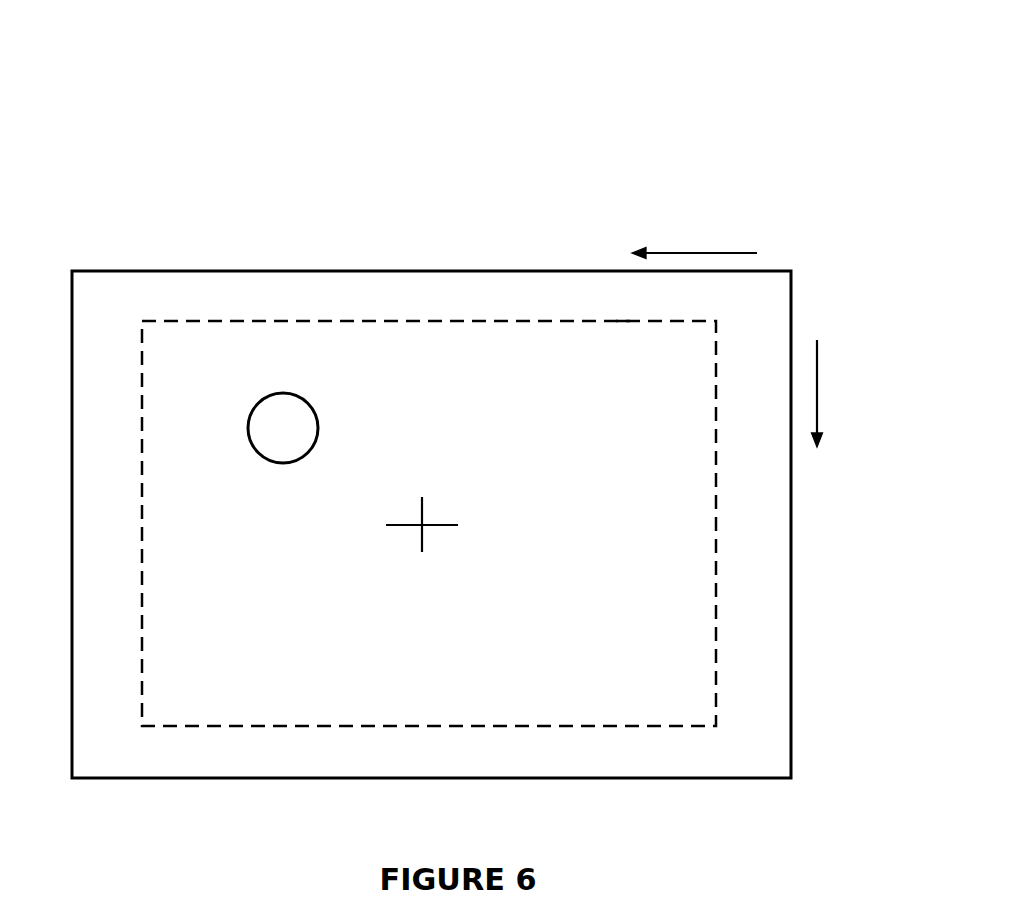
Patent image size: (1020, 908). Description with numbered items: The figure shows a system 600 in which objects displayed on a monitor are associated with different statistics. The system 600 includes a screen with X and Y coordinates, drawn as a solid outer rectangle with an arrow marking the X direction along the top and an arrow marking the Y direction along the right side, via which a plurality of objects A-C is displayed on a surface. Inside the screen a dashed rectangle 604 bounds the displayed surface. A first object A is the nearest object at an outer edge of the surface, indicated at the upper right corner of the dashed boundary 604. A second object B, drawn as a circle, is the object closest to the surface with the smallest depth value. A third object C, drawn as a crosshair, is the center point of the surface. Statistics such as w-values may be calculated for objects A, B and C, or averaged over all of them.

The system 600 is at (688, 112).
The active region boundary 604 is at (686, 503).
The first object A is at (626, 351).
The second object B is at (343, 404).
The third object C is at (448, 560).
The X coordinate X is at (708, 254).
The Y coordinate Y is at (816, 379).